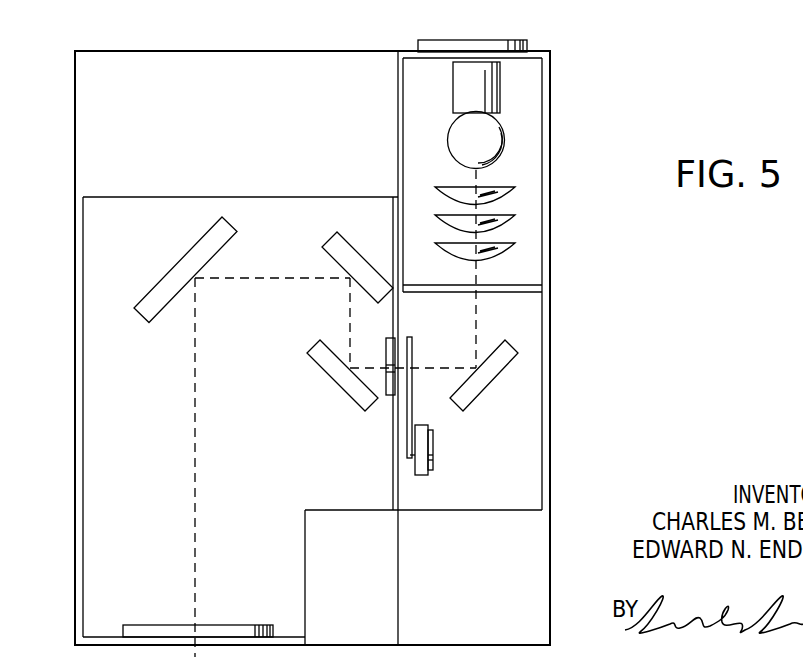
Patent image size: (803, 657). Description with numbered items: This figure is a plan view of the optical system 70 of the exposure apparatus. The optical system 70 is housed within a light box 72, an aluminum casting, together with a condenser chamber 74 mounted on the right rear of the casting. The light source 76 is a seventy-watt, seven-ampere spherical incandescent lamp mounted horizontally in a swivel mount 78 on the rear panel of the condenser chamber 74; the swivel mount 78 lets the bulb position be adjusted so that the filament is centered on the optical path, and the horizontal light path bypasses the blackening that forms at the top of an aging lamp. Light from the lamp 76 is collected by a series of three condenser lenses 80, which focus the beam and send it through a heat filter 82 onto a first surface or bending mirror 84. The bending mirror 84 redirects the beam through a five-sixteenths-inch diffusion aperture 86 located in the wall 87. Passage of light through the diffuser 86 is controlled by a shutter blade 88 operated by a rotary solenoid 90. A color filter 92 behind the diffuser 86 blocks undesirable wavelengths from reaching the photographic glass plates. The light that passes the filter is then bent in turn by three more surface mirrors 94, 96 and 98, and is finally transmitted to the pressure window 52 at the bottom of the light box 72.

The pressure window 52 is at (138, 627).
The optical system 70 is at (70, 422).
The light box 72 is at (73, 310).
The condenser chamber 74 is at (548, 245).
The light source 76 is at (504, 140).
The swivel mount 78 is at (527, 43).
The condenser lenses 80 is at (515, 243).
The heat filter 82 is at (508, 284).
The bending mirror 84 is at (500, 323).
The diffusion aperture 86 is at (390, 363).
The wall 87 is at (393, 468).
The shutter blade 88 is at (413, 352).
The rotary solenoid 90 is at (433, 457).
The color filter 92 is at (382, 397).
The surface mirror 94 is at (332, 343).
The surface mirror 96 is at (333, 250).
The surface mirror 98 is at (166, 312).